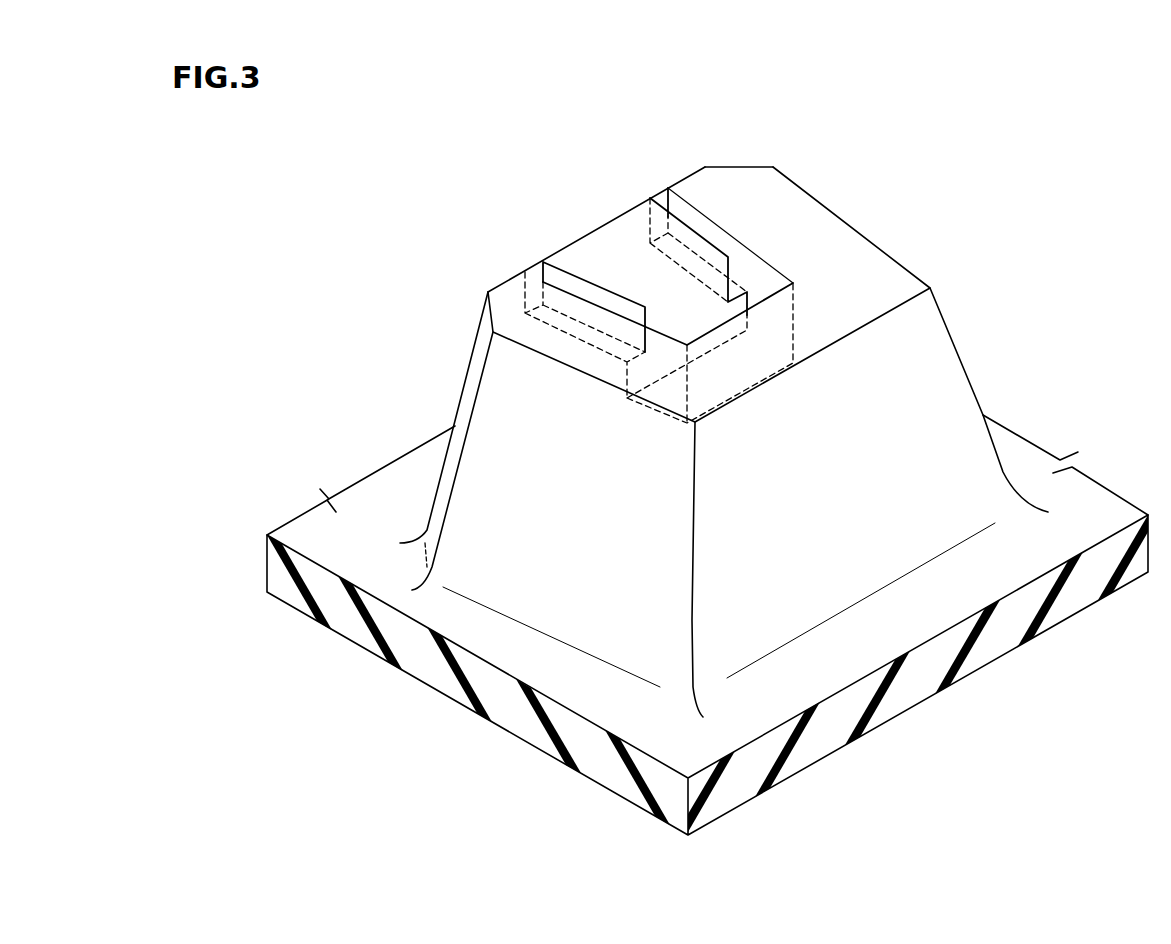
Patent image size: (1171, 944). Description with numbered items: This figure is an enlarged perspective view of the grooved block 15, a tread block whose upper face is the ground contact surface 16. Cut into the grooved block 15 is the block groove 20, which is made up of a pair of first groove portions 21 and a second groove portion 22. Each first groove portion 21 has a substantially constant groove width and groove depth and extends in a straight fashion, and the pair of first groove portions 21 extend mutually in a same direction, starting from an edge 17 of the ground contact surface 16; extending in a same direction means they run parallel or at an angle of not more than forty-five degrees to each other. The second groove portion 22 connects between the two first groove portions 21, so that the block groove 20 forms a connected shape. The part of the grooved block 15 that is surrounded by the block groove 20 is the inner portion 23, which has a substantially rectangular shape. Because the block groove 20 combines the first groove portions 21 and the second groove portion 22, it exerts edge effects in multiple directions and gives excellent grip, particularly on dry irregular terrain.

The grooved block 15 is at (466, 339).
The ground contact surface 16 is at (737, 190).
The edge 17 is at (560, 245).
The block groove 20 is at (663, 78).
The first groove portion 21 is at (612, 305).
The second groove portion 22 is at (692, 318).
The inner portion 23 is at (583, 260).